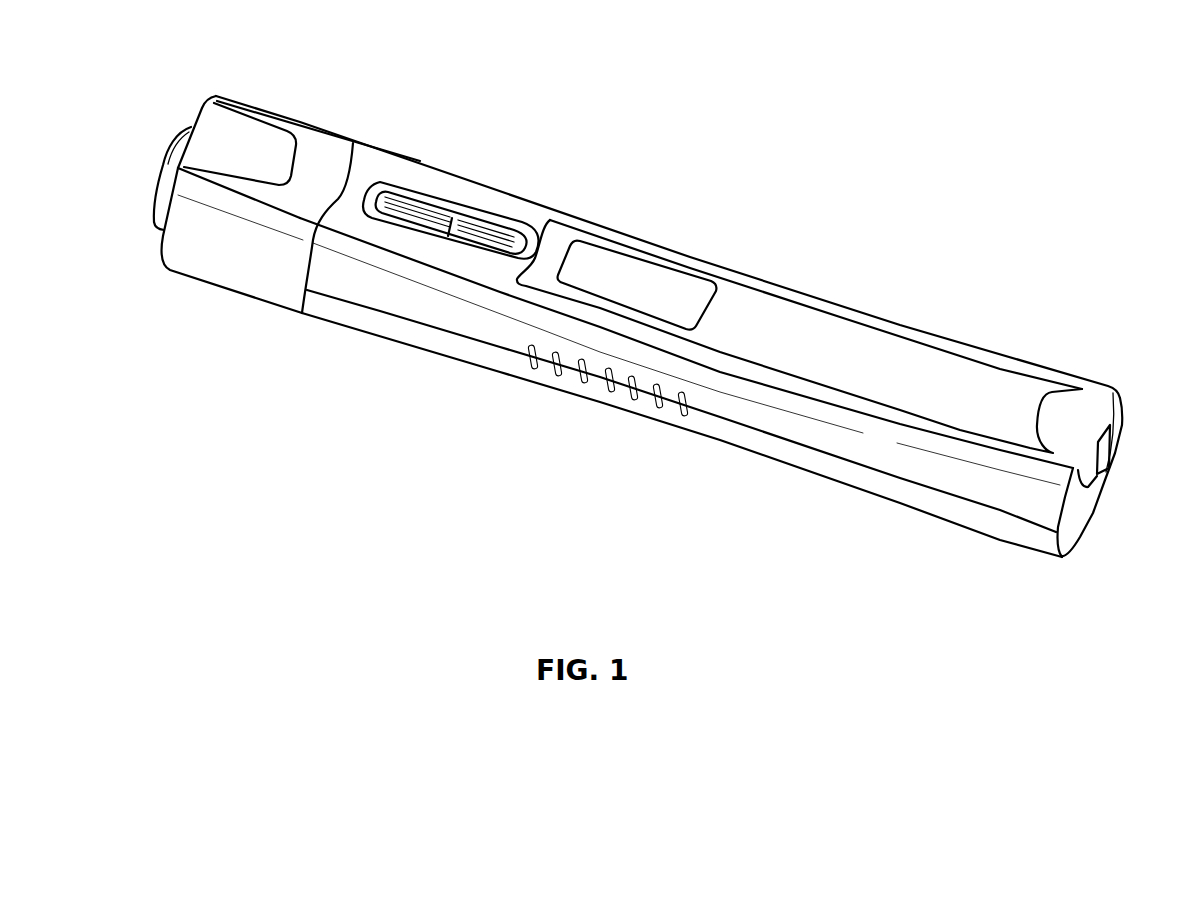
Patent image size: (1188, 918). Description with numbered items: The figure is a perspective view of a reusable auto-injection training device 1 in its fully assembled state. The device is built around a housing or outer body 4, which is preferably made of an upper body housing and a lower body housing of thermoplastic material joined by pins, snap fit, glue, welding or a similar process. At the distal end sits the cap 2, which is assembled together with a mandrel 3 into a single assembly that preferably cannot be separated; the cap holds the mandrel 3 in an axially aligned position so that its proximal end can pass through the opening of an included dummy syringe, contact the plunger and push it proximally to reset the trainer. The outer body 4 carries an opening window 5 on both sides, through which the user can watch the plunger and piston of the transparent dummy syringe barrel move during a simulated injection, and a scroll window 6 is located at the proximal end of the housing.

The reusable auto-injection training device 1 is at (661, 188).
The cap 2 is at (294, 163).
The mandrel 3 is at (161, 181).
The outer body 4 is at (908, 330).
The opening window 5 is at (427, 212).
The scroll window 6 is at (1115, 442).